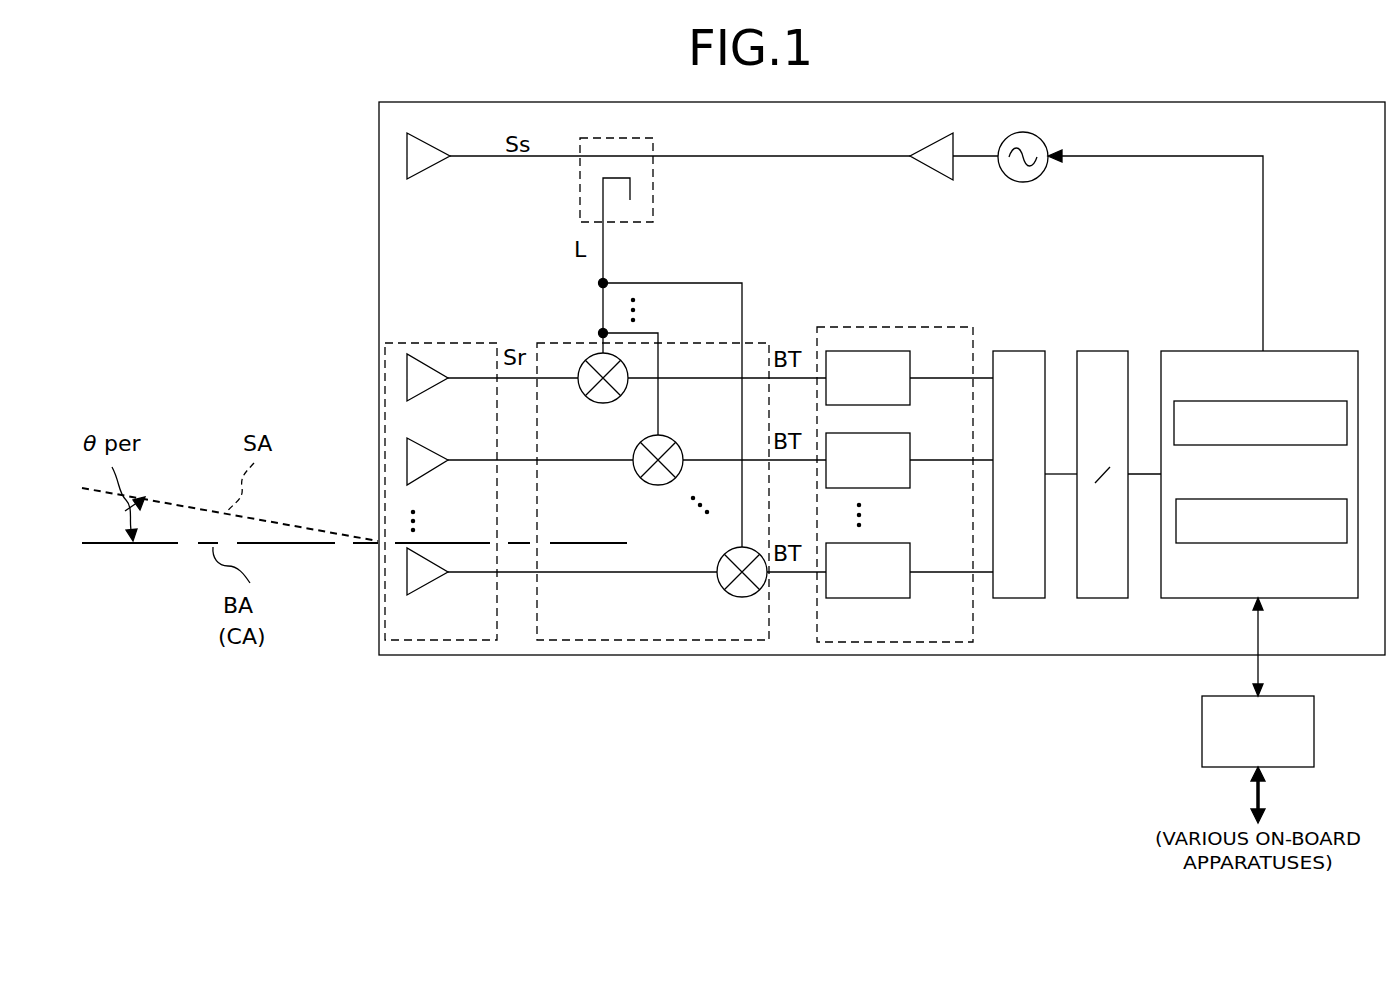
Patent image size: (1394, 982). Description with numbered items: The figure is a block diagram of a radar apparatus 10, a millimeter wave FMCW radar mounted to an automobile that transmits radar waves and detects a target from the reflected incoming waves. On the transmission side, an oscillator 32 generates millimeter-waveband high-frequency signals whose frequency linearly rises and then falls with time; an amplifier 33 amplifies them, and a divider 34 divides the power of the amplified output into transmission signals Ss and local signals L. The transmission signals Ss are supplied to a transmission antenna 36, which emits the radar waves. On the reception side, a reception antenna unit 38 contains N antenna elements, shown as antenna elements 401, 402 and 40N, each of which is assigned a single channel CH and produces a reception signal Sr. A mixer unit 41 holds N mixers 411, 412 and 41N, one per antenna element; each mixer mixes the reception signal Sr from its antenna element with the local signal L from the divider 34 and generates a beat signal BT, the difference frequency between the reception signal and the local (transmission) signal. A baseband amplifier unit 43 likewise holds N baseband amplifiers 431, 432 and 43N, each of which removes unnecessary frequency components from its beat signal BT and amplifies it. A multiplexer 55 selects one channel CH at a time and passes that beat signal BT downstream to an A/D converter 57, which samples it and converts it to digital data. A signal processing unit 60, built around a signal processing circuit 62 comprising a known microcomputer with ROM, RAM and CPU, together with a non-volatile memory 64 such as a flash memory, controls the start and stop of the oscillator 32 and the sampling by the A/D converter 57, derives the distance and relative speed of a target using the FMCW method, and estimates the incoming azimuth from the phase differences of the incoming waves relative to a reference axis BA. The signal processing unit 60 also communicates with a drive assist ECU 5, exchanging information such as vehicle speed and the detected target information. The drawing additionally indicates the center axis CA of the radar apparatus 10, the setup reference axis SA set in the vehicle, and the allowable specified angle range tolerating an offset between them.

The radar apparatus 10 is at (1275, 102).
The oscillator 32 is at (1030, 182).
The amplifier 33 is at (938, 178).
The divider 34 is at (576, 170).
The transmission antenna 36 is at (420, 172).
The reception antenna unit 38 is at (441, 455).
The antenna element 401 is at (432, 392).
The antenna element 402 is at (432, 474).
The antenna element 40N is at (432, 586).
The mixer unit 41 is at (661, 457).
The mixer 411 is at (585, 396).
The mixer 412 is at (640, 478).
The mixer 41N is at (724, 590).
The baseband amplifier unit 43 is at (895, 452).
The baseband amplifier 431 is at (910, 392).
The baseband amplifier 432 is at (910, 475).
The baseband amplifier 43N is at (910, 585).
The multiplexer 55 is at (1020, 598).
The A/D converter 57 is at (1100, 598).
The signal processing unit 60 is at (1259, 446).
The signal processing circuit 62 is at (1272, 445).
The non-volatile memory 64 is at (1272, 543).
The drive assist ECU 5 is at (1314, 752).